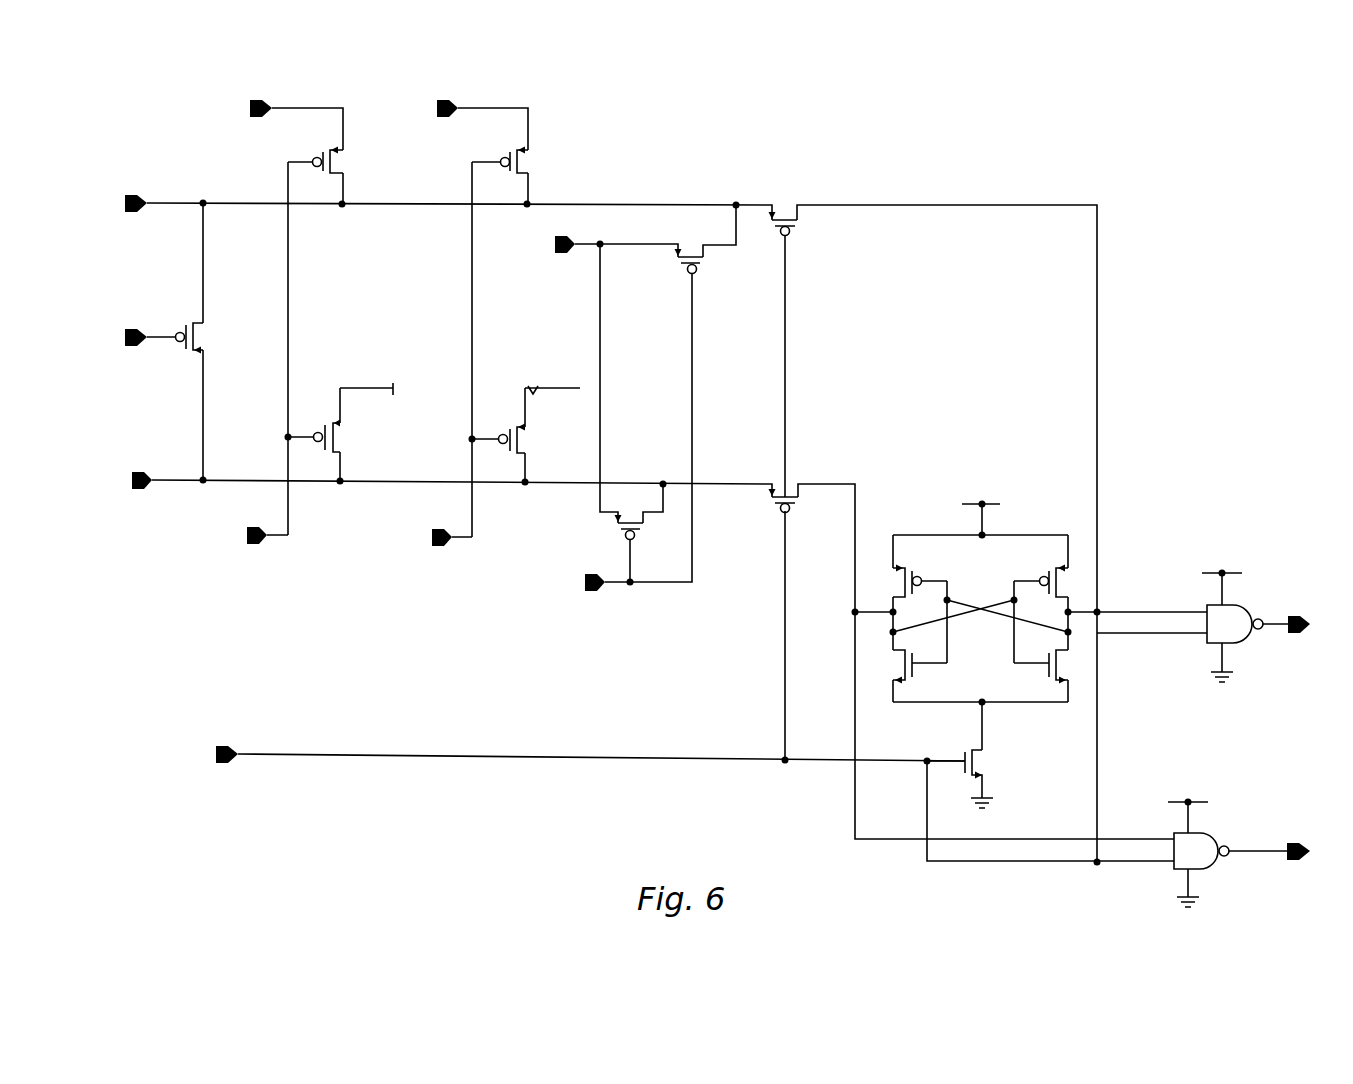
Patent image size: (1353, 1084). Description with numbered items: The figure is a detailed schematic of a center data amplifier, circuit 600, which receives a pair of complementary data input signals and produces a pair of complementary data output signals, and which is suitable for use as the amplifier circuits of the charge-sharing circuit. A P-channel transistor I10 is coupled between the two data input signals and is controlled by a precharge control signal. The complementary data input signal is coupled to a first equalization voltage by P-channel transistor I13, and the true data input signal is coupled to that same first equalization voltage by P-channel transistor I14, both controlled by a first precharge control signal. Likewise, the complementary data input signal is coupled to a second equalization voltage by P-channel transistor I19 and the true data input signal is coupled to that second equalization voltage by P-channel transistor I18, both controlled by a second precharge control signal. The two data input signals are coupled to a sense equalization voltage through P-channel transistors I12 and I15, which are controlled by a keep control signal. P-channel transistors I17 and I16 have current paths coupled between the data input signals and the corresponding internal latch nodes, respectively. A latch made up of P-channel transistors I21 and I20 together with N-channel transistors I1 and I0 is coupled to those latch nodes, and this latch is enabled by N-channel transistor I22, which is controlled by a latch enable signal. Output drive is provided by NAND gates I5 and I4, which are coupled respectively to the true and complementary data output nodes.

The circuit 600 is at (116, 126).
The P-channel transistor I13 is at (315, 150).
The P-channel transistor I19 is at (500, 150).
The P-channel transistor I17 is at (801, 226).
The P-channel transistor I12 is at (679, 269).
The P-channel transistor I10 is at (175, 328).
The P-channel transistor I14 is at (314, 427).
The P-channel transistor I18 is at (498, 430).
The P-channel transistor I15 is at (617, 534).
The P-channel transistor I16 is at (801, 510).
The P-channel transistor I21 is at (920, 573).
The P-channel transistor I20 is at (1041, 573).
The N-channel transistor I1 is at (920, 664).
The N-channel transistor I0 is at (1041, 658).
The N-channel transistor I22 is at (960, 768).
The NAND gate I5 is at (1240, 627).
The NAND gate I4 is at (1223, 854).